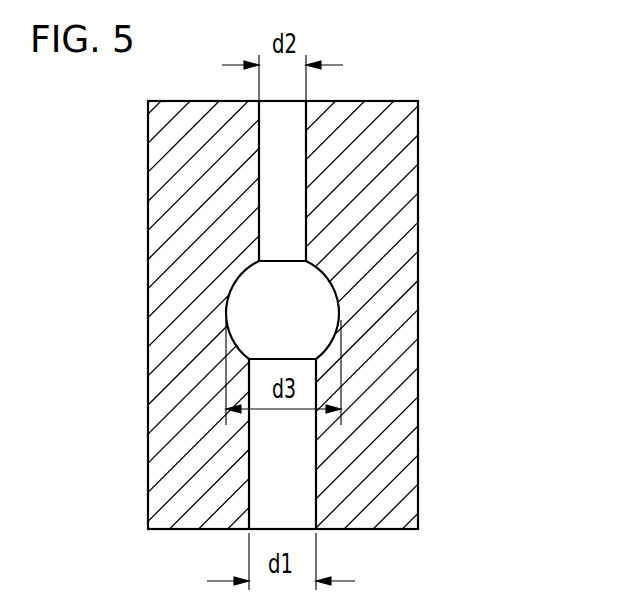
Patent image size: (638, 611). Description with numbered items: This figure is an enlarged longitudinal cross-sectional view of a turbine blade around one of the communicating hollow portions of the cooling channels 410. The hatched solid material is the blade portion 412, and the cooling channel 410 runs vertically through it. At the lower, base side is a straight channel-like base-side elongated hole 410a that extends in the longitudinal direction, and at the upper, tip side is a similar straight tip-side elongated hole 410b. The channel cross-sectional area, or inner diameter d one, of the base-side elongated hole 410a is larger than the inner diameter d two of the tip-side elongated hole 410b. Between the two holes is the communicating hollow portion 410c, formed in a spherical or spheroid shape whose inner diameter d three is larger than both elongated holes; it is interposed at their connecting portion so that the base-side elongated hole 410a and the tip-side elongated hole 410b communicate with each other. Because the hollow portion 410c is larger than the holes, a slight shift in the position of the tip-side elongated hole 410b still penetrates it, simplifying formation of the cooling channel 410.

The blade portion 412 is at (148, 200).
The cooling channel 410 is at (407, 315).
The base-side elongated hole 410a is at (383, 444).
The tip-side elongated hole 410b is at (295, 183).
The communicating hollow portion 410c is at (292, 316).